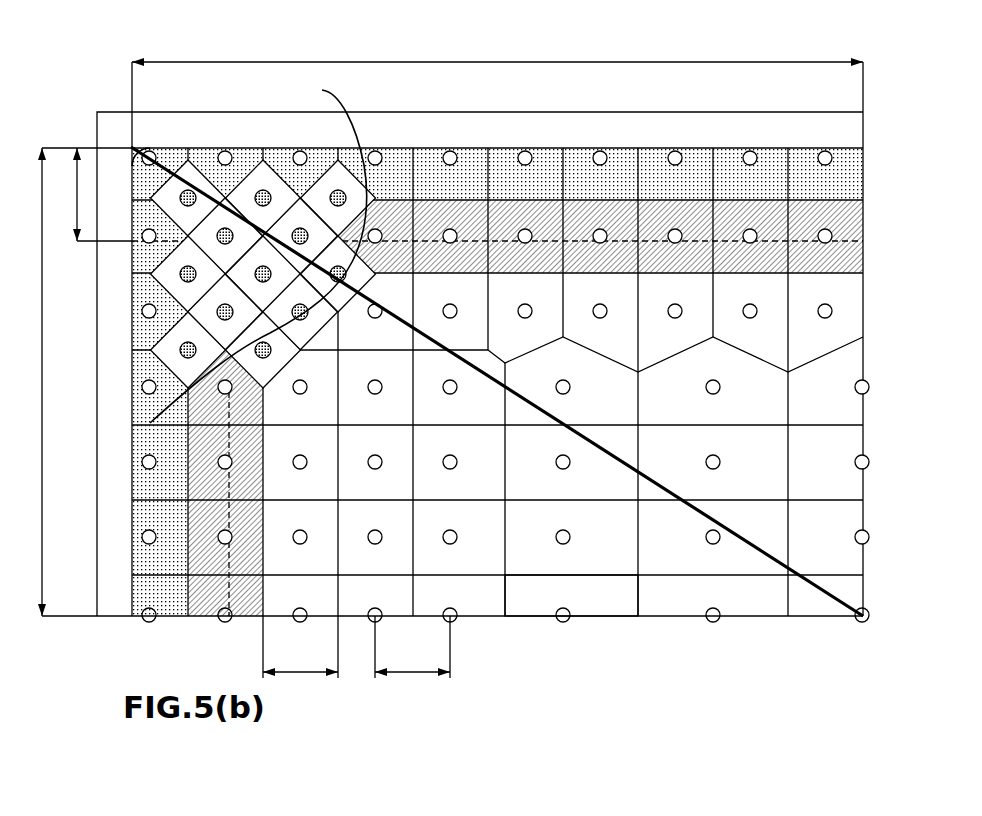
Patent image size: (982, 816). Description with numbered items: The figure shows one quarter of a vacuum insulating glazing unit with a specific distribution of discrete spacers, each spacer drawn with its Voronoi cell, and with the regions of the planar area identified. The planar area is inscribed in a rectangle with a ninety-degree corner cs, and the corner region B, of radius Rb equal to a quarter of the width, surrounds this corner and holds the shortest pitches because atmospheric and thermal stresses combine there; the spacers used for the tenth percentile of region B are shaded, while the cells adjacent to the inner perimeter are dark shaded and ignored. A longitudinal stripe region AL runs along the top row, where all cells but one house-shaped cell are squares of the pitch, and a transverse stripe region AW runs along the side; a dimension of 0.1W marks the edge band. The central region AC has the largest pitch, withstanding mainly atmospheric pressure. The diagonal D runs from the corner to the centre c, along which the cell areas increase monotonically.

The corner cs is at (133, 123).
The corner region B is at (258, 251).
The longitudinal stripe region AL is at (842, 223).
The transverse stripe region AW is at (228, 592).
The central region AC is at (662, 588).
The diagonal D is at (817, 588).
The centre c is at (865, 617).
The 0.1W dimension 0.1W is at (89, 194).